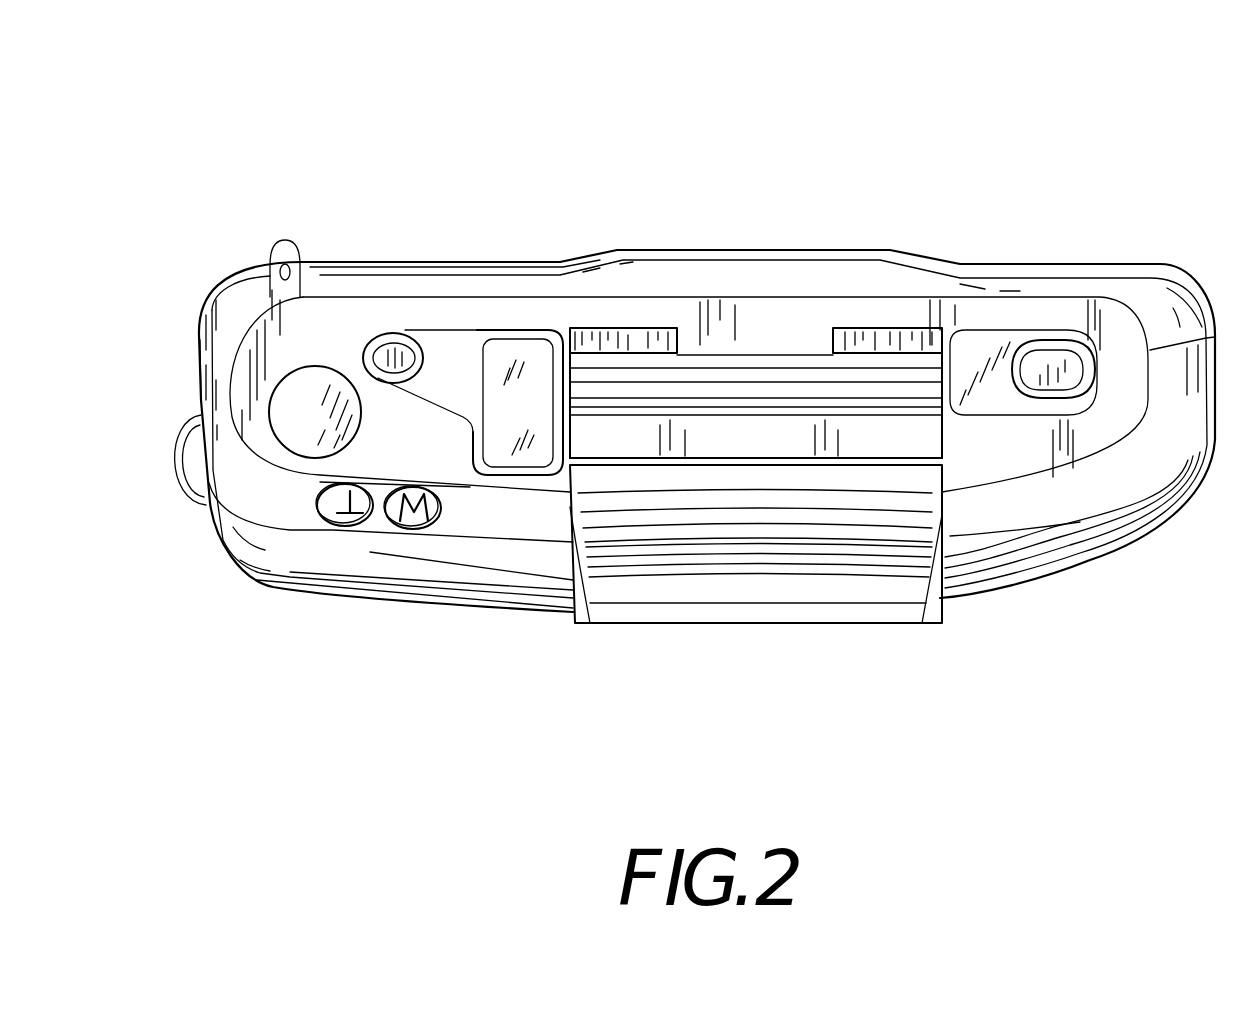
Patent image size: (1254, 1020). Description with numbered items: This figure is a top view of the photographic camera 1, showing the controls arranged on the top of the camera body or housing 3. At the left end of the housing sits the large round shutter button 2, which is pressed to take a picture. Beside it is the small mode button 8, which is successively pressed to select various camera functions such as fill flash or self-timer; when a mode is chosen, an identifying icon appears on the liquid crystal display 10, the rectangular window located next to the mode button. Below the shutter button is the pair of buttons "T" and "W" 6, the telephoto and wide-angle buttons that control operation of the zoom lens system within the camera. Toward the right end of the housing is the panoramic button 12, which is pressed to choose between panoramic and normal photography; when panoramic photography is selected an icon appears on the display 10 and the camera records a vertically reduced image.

The photographic camera 1 is at (303, 145).
The shutter button 2 is at (287, 395).
The camera body or housing 3 is at (1107, 560).
The pair of buttons "T" and "W" 6 is at (410, 530).
The mode button 8 is at (385, 333).
The liquid crystal display (LCD) 10 is at (502, 348).
The panoramic button 12 is at (1040, 355).